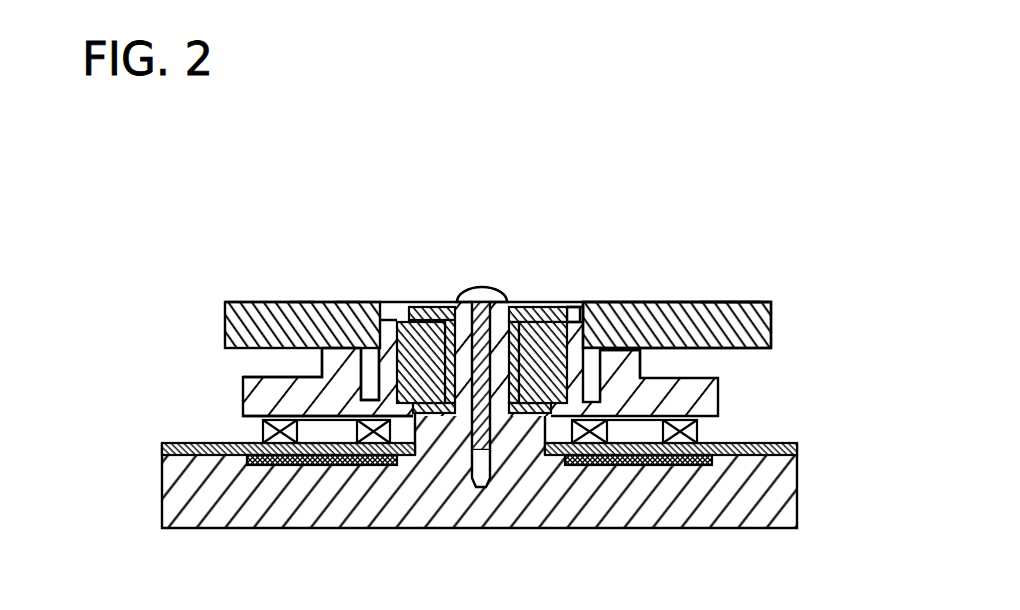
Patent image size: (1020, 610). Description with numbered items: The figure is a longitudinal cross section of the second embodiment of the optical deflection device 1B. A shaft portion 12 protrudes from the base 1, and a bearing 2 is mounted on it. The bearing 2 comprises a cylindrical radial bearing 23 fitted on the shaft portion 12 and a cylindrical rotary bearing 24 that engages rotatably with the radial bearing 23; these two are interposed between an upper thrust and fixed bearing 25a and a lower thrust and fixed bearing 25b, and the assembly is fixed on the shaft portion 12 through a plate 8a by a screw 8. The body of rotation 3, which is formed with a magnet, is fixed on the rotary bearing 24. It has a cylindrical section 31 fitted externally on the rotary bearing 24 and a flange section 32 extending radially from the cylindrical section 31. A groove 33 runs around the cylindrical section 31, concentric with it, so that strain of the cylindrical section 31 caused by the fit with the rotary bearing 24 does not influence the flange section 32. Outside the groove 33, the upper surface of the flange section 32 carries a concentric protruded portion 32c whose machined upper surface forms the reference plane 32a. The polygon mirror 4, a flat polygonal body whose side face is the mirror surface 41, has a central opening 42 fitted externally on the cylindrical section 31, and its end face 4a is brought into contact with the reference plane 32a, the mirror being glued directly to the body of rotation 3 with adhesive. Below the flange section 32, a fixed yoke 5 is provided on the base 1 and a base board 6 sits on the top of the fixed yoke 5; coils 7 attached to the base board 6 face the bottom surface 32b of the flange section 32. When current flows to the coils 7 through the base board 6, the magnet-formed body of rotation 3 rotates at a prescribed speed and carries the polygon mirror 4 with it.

The base 1 is at (797, 492).
The optical deflection device 1B is at (689, 246).
The bearing 2 is at (581, 267).
The body of rotation 3 is at (733, 390).
The polygon mirror 4 is at (730, 302).
The end face 4a is at (641, 354).
The fixed yoke 5 is at (640, 467).
The base board 6 is at (797, 453).
The coils 7 is at (698, 435).
The screw 8 is at (483, 289).
The plate 8a is at (510, 302).
The shaft portion 12 is at (467, 300).
The radial bearing 23 is at (513, 302).
The rotary bearing 24 is at (420, 303).
The upper thrust and fixed bearing 25a is at (545, 302).
The lower thrust and fixed bearing 25b is at (416, 418).
The cylindrical section 31 is at (371, 351).
The flange section 32 is at (243, 394).
The reference plane 32a is at (302, 301).
The bottom surface 32b is at (263, 418).
The protruded portion 32c is at (342, 362).
The groove 33 is at (345, 301).
The mirror surface 41 is at (225, 323).
The opening 42 is at (575, 305).